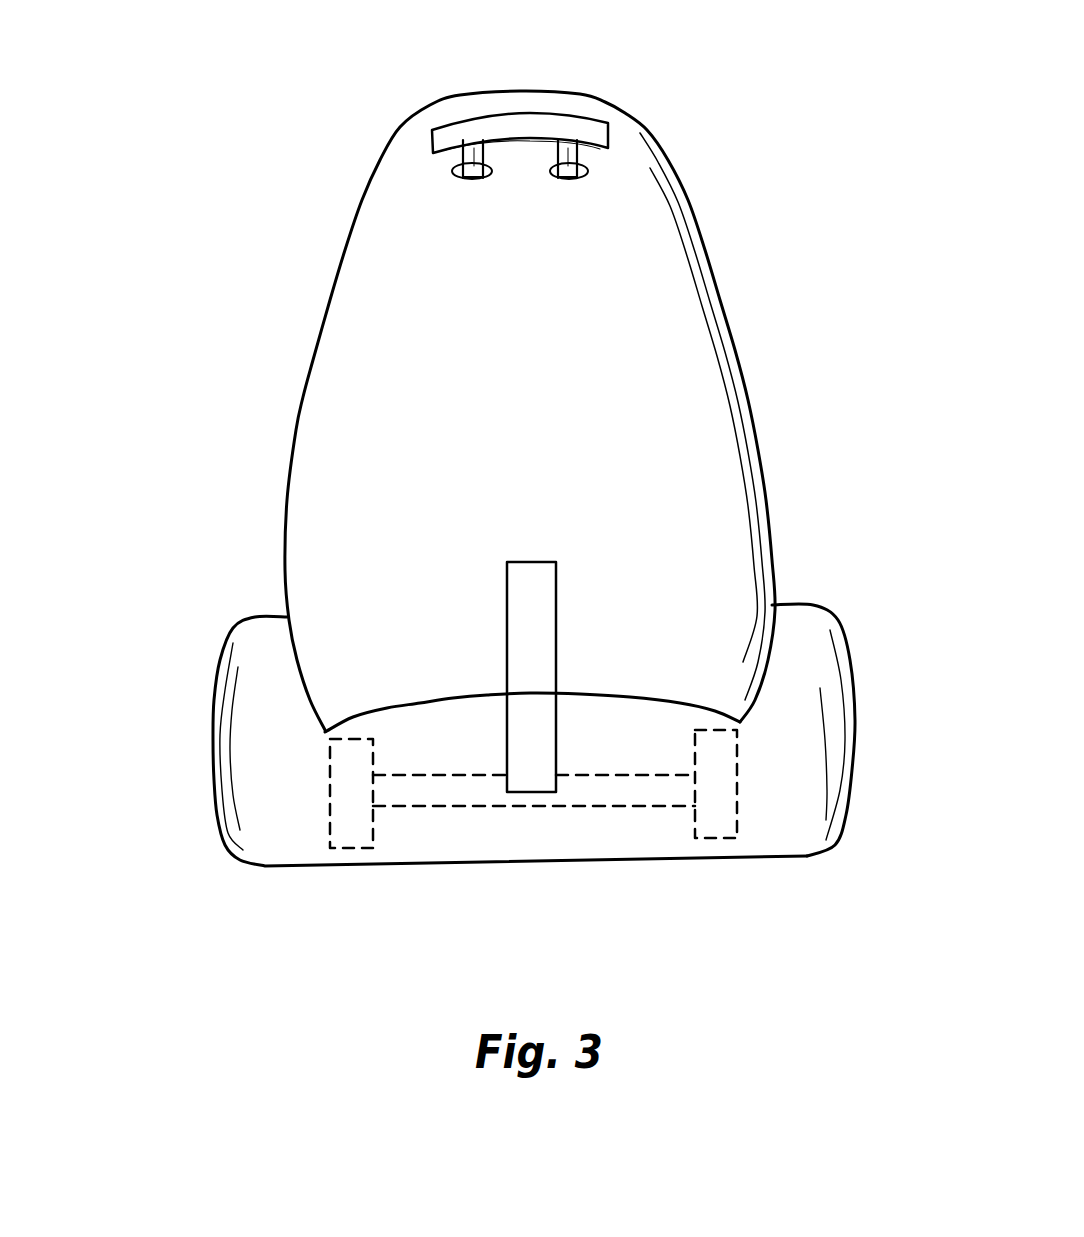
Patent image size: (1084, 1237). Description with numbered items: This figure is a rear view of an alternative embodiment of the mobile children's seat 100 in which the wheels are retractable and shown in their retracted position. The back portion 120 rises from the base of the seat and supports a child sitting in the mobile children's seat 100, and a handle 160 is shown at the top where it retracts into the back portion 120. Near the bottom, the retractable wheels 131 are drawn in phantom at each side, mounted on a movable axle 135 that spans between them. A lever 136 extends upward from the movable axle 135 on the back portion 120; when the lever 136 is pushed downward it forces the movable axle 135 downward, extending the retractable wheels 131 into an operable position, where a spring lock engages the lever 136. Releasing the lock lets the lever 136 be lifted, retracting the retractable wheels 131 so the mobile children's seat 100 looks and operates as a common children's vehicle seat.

The mobile children's seat 100 is at (206, 376).
The back portion 120 is at (645, 235).
The handle 160 is at (565, 125).
The lever 136 is at (537, 608).
The retractable wheels 131 is at (350, 810).
The movable axle 135 is at (458, 790).